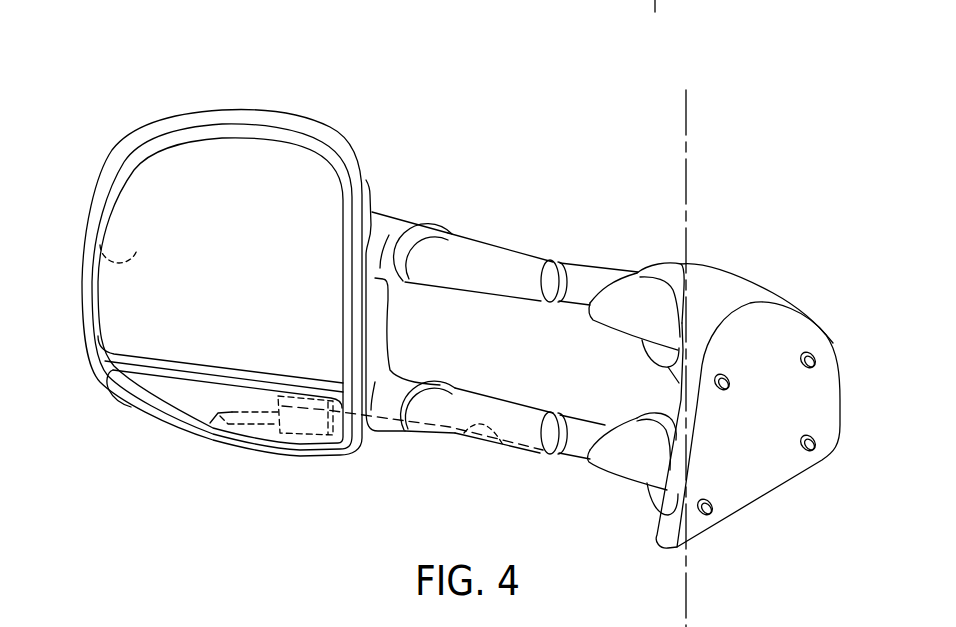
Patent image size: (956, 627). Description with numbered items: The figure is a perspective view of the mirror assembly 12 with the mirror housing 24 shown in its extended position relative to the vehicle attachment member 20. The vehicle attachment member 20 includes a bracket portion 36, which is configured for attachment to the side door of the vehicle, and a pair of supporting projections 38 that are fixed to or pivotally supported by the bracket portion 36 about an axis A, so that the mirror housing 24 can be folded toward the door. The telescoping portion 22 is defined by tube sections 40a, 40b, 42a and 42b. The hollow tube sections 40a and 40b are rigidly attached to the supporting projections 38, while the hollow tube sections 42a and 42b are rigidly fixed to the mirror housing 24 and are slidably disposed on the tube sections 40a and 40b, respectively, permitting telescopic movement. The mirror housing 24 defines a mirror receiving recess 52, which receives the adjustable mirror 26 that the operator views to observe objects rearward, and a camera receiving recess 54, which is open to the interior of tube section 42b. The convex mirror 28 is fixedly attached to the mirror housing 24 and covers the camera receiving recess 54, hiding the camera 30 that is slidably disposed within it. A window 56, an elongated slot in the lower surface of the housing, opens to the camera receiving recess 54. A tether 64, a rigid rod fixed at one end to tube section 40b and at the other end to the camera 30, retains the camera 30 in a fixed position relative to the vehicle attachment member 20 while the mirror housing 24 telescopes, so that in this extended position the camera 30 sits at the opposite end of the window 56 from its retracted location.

The mirror assembly 12 is at (537, 145).
The vehicle attachment member 20 is at (738, 270).
The telescoping portion 22 is at (516, 240).
The mirror housing 24 is at (273, 121).
The adjustable mirror 26 is at (150, 204).
The convex mirror 28 is at (137, 383).
The camera 30 is at (307, 417).
The bracket portion 36 is at (773, 293).
The supporting projections 38 is at (616, 332).
The tube section 40a is at (572, 288).
The tube section 40b is at (572, 440).
The tube section 42a is at (455, 288).
The tube section 42b is at (502, 396).
The mirror receiving recess 52 is at (97, 255).
The camera receiving recess 54 is at (170, 395).
The window 56 is at (223, 432).
The tether 64 is at (505, 447).
The axis A is at (686, 127).